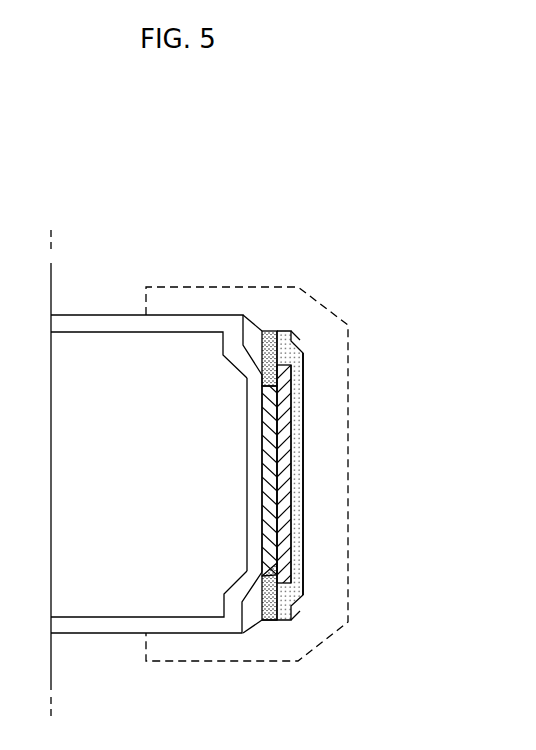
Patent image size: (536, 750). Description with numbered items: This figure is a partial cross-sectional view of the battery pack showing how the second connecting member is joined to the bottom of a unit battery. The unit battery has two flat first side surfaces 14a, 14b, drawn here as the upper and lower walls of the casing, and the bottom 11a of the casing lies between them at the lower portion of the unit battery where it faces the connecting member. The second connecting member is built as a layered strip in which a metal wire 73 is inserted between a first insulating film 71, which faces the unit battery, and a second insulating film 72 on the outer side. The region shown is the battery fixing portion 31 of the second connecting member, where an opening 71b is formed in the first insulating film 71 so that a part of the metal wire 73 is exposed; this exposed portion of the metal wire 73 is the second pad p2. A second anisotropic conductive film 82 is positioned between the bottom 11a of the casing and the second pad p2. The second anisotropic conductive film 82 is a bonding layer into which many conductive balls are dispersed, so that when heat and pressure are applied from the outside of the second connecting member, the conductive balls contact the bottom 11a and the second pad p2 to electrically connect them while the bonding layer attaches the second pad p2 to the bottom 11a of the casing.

The first side surface 14a is at (97, 315).
The first side surface 14b is at (97, 633).
The bottom of the casing 11a is at (247, 428).
The first insulating film 71 is at (265, 330).
The opening 71b is at (268, 567).
The second anisotropic conductive film 82 is at (262, 492).
The second insulating film 72 is at (301, 368).
The metal wire 73 is at (288, 468).
The battery fixing portion 31 is at (318, 558).